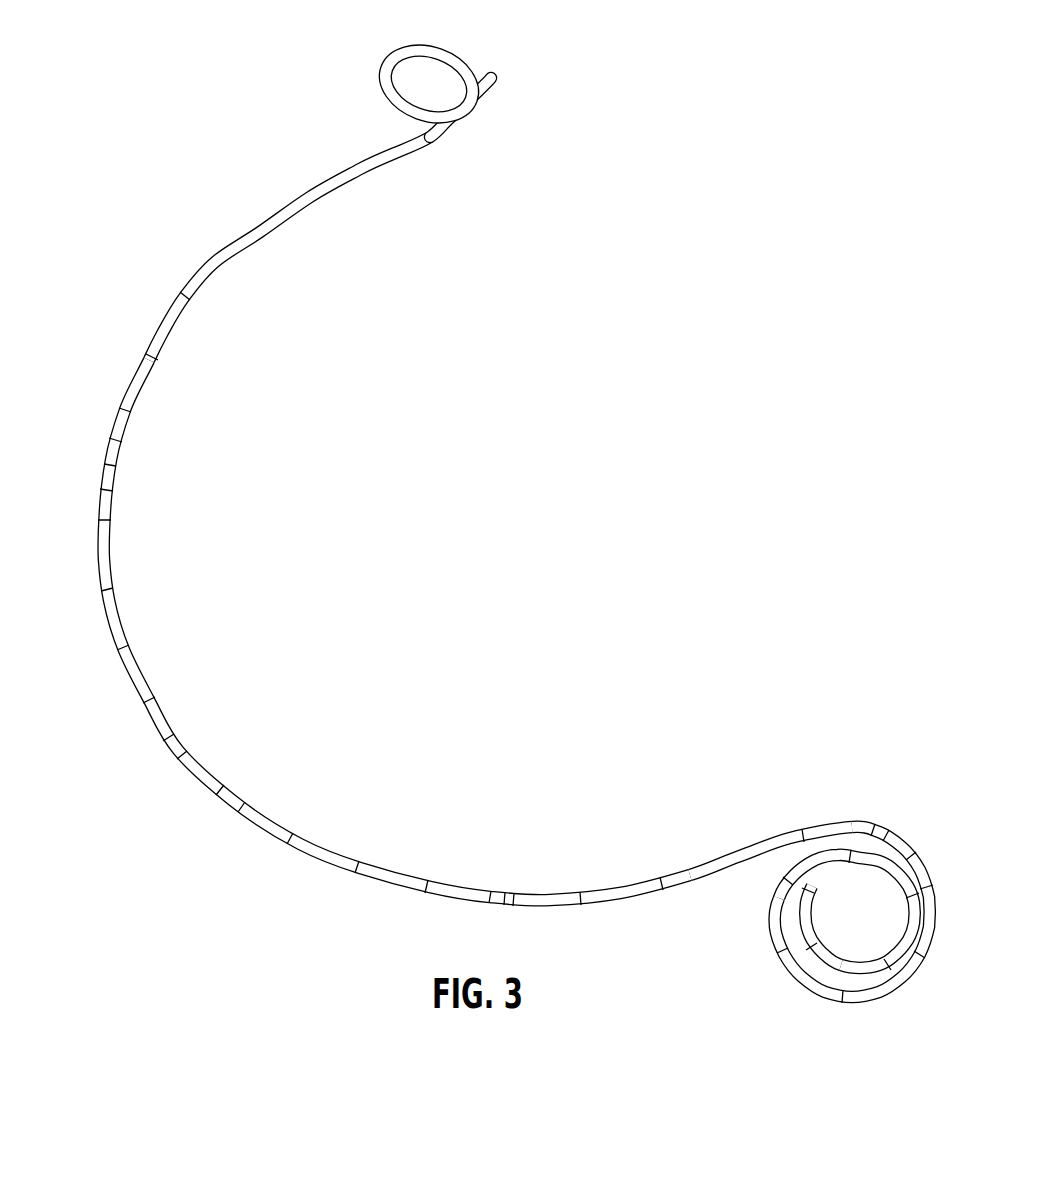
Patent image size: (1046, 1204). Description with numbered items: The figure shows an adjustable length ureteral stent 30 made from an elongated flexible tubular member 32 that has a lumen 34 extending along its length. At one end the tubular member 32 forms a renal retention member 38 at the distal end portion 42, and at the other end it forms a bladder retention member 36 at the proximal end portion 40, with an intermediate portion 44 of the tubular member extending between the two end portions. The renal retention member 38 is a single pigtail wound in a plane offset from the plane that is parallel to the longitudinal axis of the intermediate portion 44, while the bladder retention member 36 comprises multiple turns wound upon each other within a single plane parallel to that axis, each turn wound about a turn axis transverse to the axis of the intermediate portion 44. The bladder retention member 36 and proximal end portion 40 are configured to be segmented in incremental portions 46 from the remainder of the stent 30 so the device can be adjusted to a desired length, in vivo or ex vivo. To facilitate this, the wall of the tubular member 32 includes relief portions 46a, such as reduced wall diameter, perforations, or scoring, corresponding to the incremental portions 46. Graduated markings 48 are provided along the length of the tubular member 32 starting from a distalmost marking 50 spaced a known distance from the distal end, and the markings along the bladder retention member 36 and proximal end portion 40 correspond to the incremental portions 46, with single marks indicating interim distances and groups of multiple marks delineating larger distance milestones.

The adjustable length ureteral stent 30 is at (502, 537).
The elongated flexible tubular member 32 is at (520, 537).
The lumen 34 is at (497, 78).
The bladder retention member 36 is at (817, 929).
The renal retention member 38 is at (378, 70).
The proximal end portion 40 is at (690, 820).
The distal end portion 42 is at (329, 220).
The intermediate portion 44 is at (126, 748).
The incremental portion 46 is at (795, 949).
The relief portion 46a is at (766, 968).
The graduated marking 48 is at (200, 753).
The distalmost marking 50 is at (192, 312).